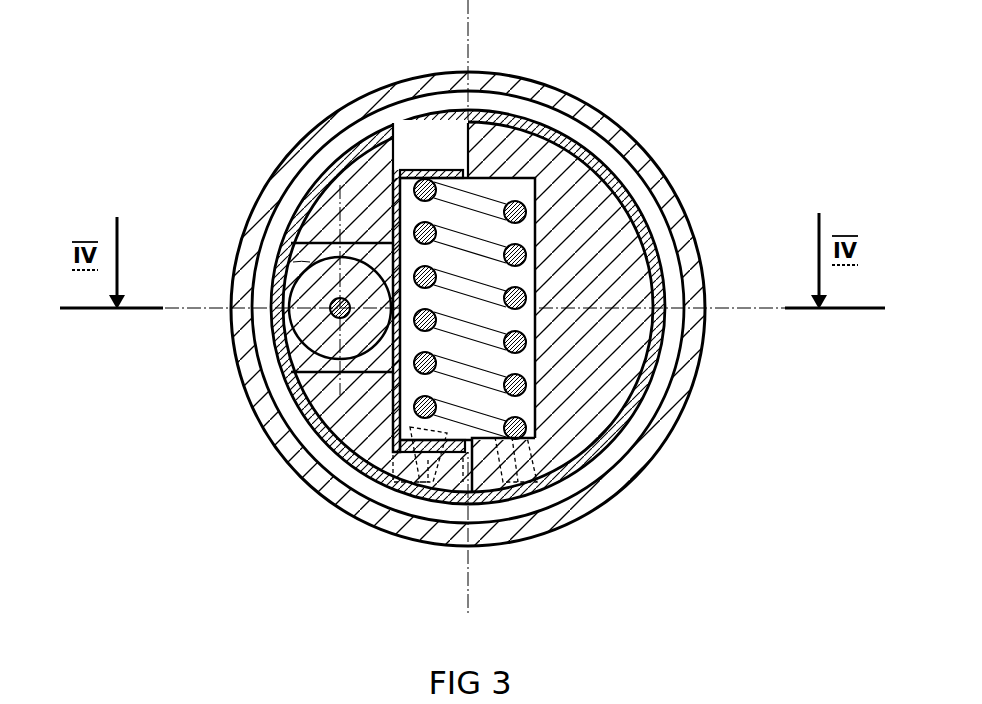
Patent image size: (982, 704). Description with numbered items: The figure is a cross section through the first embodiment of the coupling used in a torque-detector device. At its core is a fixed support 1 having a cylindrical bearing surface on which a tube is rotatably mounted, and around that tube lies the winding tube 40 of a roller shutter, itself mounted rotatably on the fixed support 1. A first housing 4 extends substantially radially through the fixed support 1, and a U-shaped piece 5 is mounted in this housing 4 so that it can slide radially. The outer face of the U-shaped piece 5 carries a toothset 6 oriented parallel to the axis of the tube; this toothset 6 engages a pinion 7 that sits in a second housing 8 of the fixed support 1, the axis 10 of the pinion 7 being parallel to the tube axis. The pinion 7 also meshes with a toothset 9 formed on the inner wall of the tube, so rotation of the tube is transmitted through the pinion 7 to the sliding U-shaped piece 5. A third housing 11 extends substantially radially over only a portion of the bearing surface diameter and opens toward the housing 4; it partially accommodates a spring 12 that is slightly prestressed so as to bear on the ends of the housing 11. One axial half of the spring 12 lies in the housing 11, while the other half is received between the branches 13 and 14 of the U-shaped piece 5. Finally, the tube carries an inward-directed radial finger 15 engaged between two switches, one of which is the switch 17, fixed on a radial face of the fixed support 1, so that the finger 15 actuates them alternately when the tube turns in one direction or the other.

The fixed support 1 is at (622, 357).
The first housing 4 is at (412, 150).
The U-shaped piece 5 is at (392, 387).
The toothset 6 is at (387, 262).
The pinion 7 is at (303, 333).
The second housing 8 is at (392, 243).
The toothset 9 is at (293, 270).
The axis 10 is at (332, 304).
The third housing 11 is at (518, 230).
The spring 12 is at (497, 203).
The branch 13 is at (445, 170).
The branch 14 is at (393, 455).
The radial finger 15 is at (449, 497).
The switch 17 is at (540, 493).
The winding tube 40 is at (598, 491).